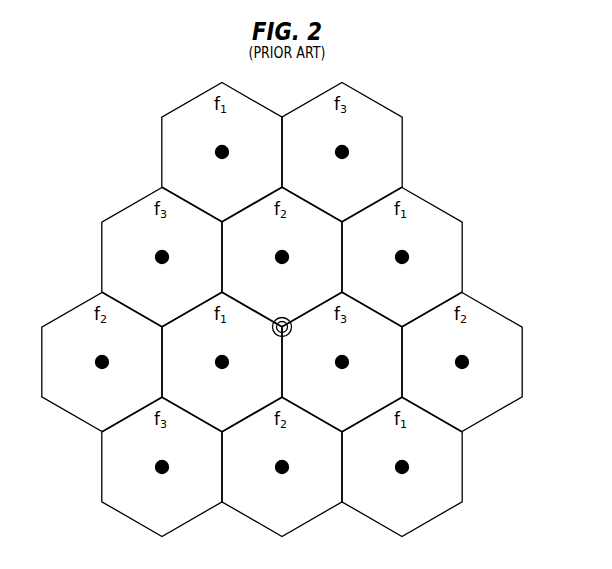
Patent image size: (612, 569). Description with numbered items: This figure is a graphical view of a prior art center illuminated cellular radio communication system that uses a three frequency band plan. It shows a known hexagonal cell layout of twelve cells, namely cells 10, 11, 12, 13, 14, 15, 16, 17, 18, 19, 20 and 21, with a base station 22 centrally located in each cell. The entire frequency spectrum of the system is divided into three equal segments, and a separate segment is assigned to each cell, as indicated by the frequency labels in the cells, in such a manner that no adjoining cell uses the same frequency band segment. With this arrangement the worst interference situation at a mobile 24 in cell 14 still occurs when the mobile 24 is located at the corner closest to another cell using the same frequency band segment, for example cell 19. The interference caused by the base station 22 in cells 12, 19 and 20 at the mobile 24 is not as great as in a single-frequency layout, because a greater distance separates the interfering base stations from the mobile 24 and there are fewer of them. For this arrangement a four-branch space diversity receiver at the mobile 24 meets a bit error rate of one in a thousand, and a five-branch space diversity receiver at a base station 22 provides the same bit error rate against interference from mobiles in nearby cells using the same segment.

The cell 10 is at (153, 520).
The cell 11 is at (273, 520).
The cell 12 is at (393, 520).
The cell 13 is at (93, 415).
The cell 14 is at (213, 415).
The cell 15 is at (333, 415).
The cell 16 is at (453, 415).
The cell 17 is at (153, 310).
The cell 18 is at (273, 310).
The cell 19 is at (393, 310).
The cell 20 is at (213, 205).
The cell 21 is at (333, 205).
The base station 22 is at (229, 152).
The mobile 24 is at (272, 330).